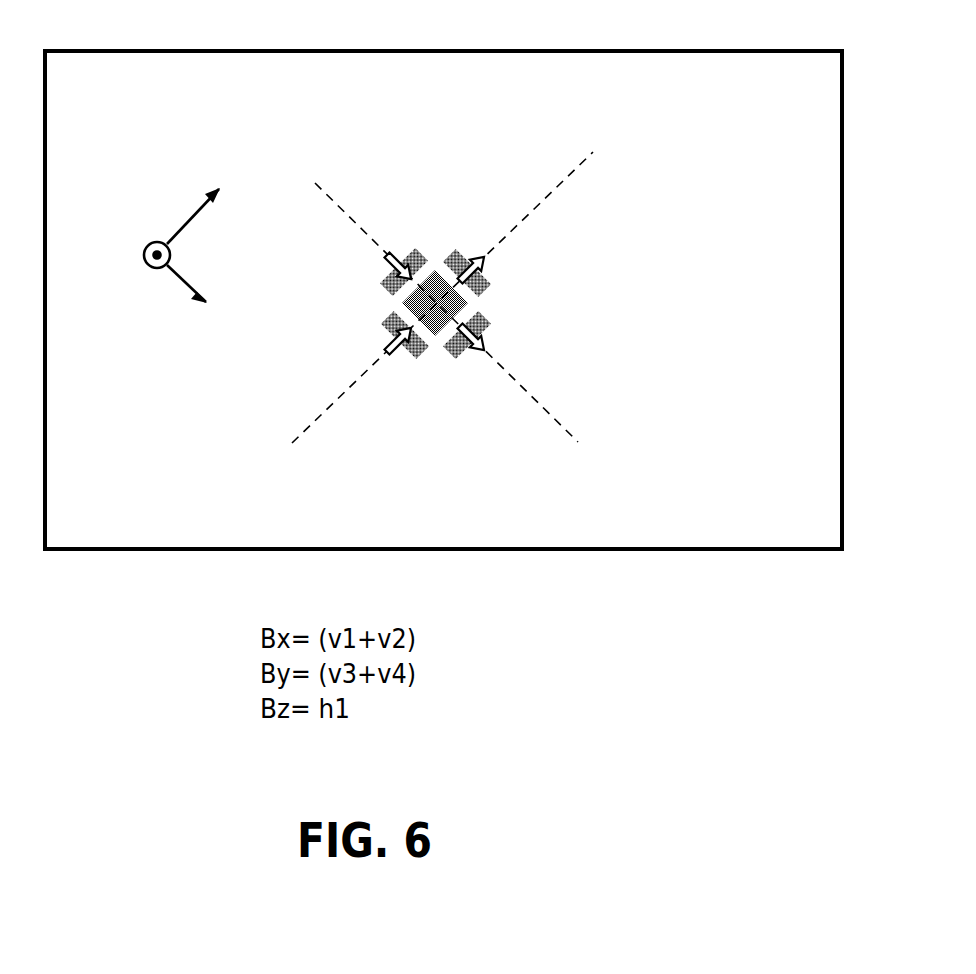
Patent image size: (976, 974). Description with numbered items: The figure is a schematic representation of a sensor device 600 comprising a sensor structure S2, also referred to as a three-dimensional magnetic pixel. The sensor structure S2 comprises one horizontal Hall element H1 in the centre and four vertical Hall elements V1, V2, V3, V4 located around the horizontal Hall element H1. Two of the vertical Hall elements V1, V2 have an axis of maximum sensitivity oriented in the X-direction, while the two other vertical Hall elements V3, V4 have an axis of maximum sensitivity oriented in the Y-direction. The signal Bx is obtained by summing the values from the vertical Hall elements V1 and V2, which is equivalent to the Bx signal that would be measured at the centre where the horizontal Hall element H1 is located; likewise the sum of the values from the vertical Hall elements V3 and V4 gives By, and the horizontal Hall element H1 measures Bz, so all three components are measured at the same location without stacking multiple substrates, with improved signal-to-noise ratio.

The sensor device 600 is at (427, 416).
The sensor structure S2 is at (434, 374).
The horizontal Hall element H1 is at (435, 303).
The vertical Hall element V1 is at (388, 272).
The vertical Hall element V2 is at (481, 335).
The vertical Hall element V3 is at (388, 335).
The vertical Hall element V4 is at (481, 273).